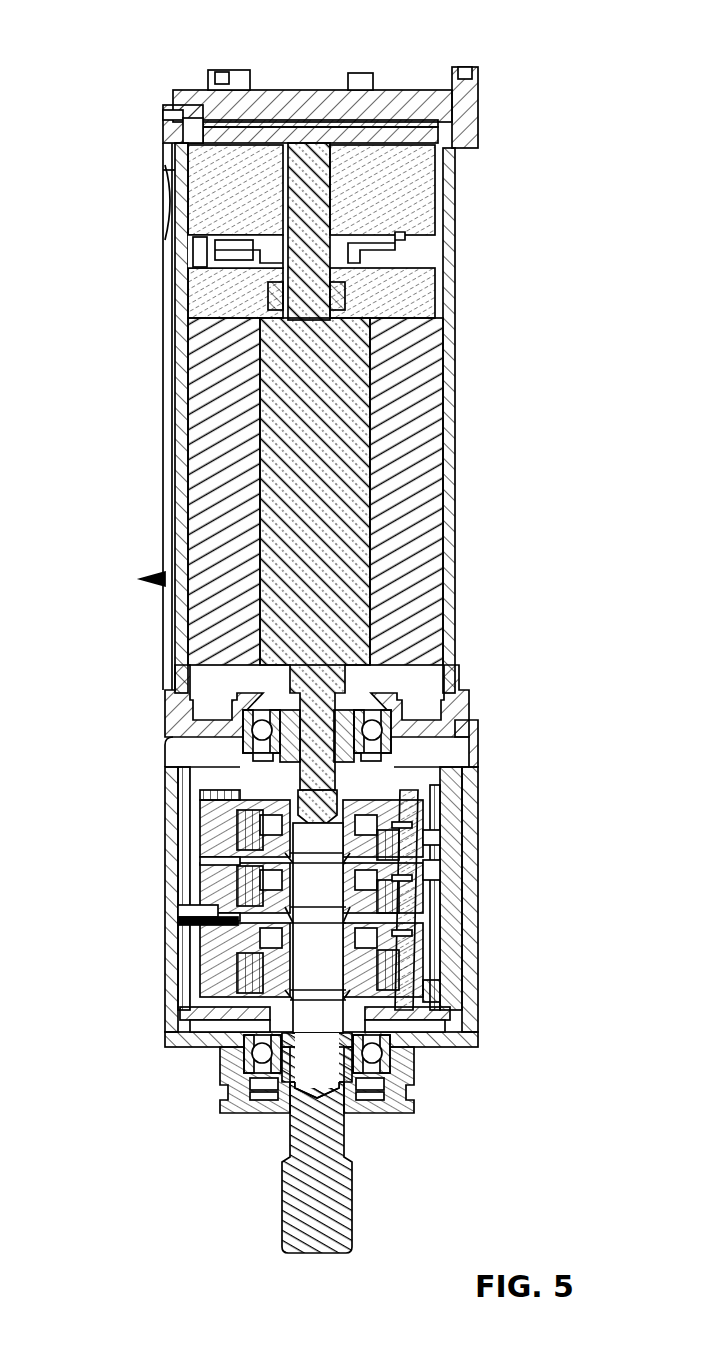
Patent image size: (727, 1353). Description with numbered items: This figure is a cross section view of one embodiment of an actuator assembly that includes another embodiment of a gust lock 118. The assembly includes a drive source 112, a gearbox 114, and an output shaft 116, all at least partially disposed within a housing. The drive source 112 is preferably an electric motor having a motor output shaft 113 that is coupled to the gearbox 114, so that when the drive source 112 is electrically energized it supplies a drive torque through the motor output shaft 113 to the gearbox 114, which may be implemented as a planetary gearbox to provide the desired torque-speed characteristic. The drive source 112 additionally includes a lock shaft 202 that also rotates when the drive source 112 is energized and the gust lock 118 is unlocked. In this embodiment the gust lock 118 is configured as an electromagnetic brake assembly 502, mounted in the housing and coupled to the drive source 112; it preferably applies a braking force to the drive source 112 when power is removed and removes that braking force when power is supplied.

The gust lock 118 is at (147, 203).
The lock shaft 202 is at (300, 190).
The electromagnetic brake assembly 502 is at (397, 185).
The drive source 112 is at (405, 540).
The motor output shaft 113 is at (317, 735).
The gearbox 114 is at (470, 935).
The output shaft 116 is at (345, 1205).